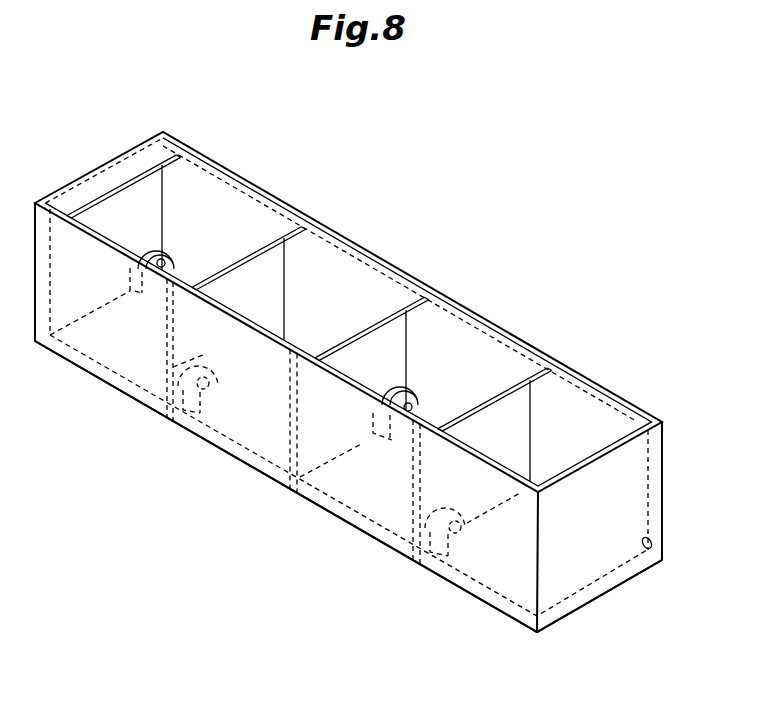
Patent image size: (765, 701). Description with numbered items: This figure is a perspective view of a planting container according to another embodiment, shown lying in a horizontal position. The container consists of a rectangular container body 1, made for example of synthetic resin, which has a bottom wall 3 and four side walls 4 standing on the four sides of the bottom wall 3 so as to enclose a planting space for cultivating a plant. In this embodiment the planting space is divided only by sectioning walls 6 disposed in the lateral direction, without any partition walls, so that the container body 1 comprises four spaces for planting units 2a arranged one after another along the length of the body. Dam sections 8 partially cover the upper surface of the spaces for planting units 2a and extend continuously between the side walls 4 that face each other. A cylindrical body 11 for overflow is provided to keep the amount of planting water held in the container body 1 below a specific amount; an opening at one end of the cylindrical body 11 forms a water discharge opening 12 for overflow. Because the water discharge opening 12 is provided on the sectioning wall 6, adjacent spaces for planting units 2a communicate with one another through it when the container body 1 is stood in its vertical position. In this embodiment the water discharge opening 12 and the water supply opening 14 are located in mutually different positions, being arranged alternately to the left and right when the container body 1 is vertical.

The container body 1 is at (411, 175).
The space for planting unit 2a is at (150, 204).
The bottom wall 3 is at (584, 617).
The side wall 4 is at (134, 363).
The sectioning wall 6 is at (274, 272).
The dam section 8 is at (534, 362).
The cylindrical body for overflow 11 is at (148, 250).
The water discharge opening for overflow 12 is at (166, 262).
The water supply opening 14 is at (652, 548).